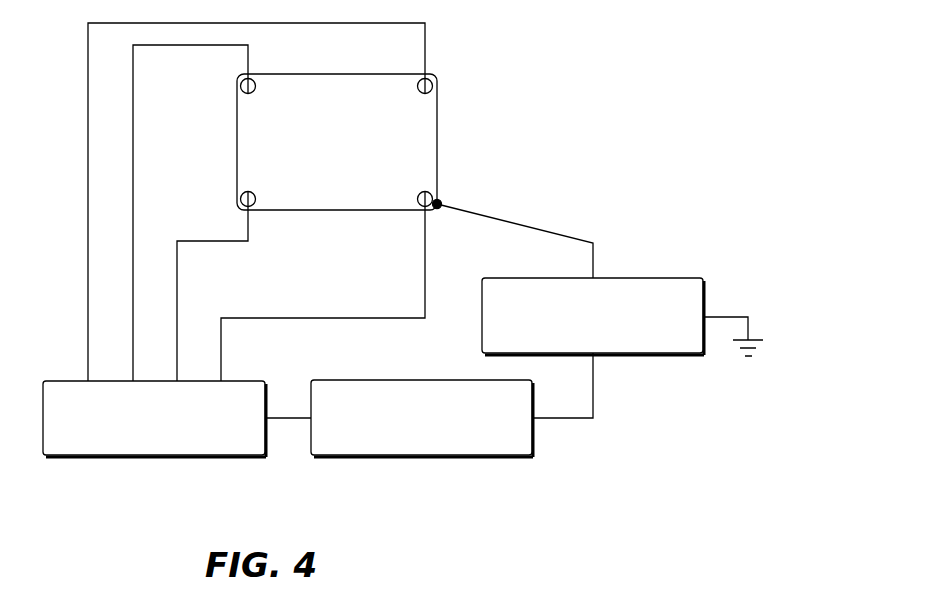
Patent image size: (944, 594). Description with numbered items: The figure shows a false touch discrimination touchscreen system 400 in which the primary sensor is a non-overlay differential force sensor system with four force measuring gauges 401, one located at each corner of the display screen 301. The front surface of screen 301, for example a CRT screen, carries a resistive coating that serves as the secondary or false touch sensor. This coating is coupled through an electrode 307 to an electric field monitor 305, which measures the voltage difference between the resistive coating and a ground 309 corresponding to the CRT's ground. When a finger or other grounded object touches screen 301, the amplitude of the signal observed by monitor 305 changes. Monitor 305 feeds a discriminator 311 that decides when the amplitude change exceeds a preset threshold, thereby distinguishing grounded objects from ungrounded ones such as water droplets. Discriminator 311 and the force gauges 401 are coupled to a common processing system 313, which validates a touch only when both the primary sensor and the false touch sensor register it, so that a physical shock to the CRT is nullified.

The touchscreen system 400 is at (652, 121).
The display screen 301 is at (352, 156).
The force measuring gauge 401 is at (240, 86).
The electrode 307 is at (442, 204).
The electric field monitor 305 is at (540, 278).
The ground 309 is at (756, 350).
The discriminator 311 is at (373, 455).
The processing system 313 is at (145, 455).